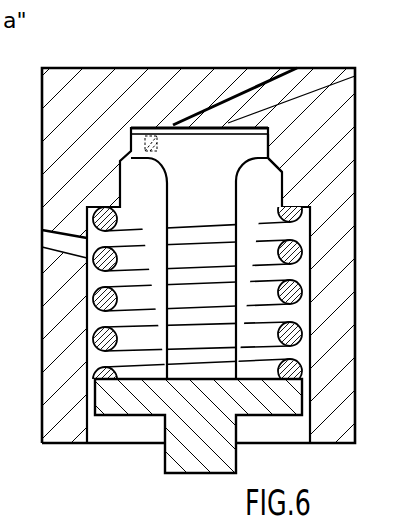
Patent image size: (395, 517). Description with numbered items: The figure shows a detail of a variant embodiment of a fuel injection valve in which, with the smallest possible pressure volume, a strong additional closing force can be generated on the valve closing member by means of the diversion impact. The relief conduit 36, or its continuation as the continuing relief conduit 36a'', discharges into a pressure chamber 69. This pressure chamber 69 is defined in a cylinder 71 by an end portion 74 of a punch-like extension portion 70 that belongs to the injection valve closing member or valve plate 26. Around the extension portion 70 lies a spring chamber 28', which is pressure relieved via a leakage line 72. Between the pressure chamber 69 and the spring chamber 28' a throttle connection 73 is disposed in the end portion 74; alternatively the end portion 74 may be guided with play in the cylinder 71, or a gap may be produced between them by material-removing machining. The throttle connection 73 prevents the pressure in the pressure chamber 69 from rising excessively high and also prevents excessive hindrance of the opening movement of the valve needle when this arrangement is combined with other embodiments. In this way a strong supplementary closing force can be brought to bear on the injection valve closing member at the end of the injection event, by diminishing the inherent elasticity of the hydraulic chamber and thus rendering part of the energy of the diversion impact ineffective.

The valve plate 26 is at (183, 457).
The spring chamber 28' is at (273, 406).
The relief conduit 36 is at (232, 104).
The continuing relief conduit 36a'' is at (282, 71).
The pressure chamber 69 is at (132, 130).
The punch-like extension portion 70 is at (188, 278).
The cylinder 71 is at (268, 138).
The leakage line 72 is at (52, 240).
The throttle connection 73 is at (136, 143).
The end portion 74 is at (258, 150).